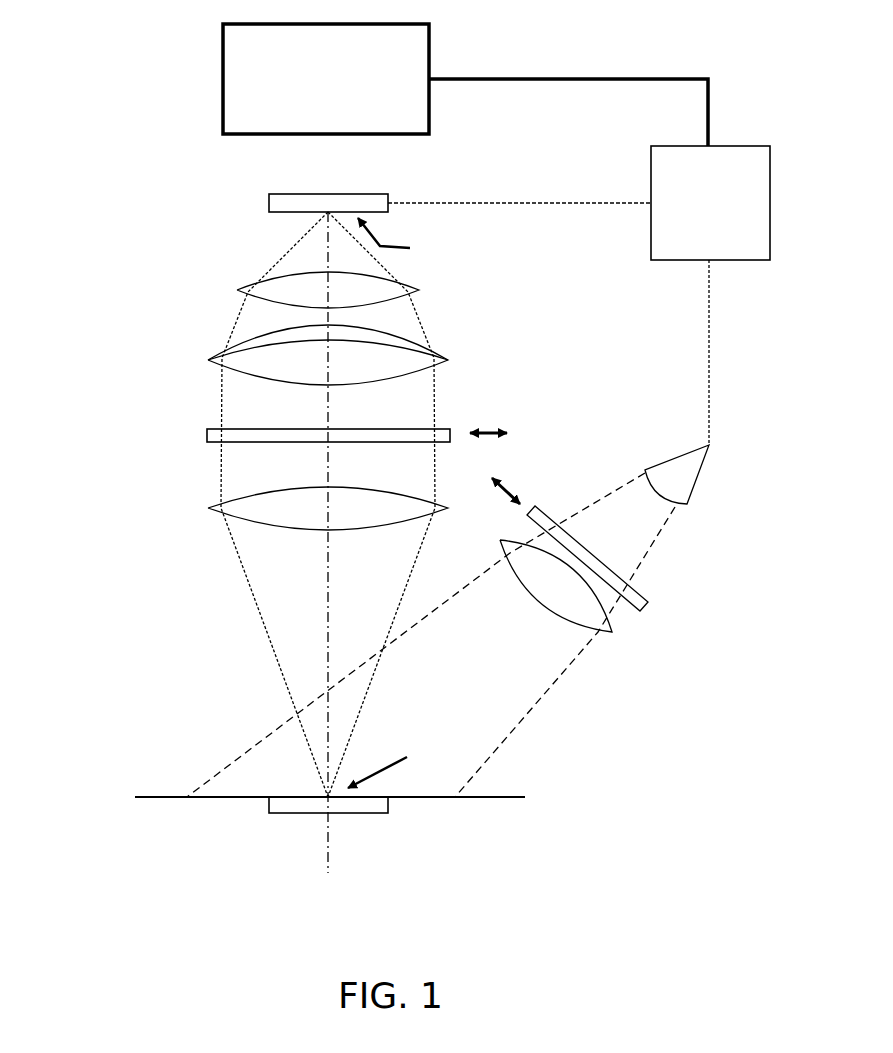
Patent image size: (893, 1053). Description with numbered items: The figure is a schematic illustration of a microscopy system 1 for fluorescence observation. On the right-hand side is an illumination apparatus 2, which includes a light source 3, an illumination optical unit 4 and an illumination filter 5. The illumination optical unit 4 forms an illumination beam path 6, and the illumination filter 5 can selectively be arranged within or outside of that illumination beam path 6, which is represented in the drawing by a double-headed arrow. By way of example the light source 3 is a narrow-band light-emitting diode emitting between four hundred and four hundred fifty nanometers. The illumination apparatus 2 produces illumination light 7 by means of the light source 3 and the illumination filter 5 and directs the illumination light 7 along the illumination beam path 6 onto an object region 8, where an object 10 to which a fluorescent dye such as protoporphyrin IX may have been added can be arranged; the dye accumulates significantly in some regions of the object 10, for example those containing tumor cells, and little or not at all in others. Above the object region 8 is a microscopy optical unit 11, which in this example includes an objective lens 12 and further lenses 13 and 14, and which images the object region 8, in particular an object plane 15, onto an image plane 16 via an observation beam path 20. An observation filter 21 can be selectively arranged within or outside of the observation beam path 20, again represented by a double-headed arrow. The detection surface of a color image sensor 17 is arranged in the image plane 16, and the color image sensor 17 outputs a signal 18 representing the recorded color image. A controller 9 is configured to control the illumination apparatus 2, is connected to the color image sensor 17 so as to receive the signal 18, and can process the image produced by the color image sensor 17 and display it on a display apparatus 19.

The microscopy system 1 is at (125, 301).
The illumination apparatus 2 is at (716, 651).
The light source 3 is at (700, 477).
The illumination optical unit 4 is at (614, 634).
The illumination filter 5 is at (646, 596).
The illumination beam path 6 is at (431, 635).
The illumination light 7 is at (548, 690).
The object region 8 is at (389, 768).
The controller 9 is at (710, 295).
The object 10 is at (366, 815).
The microscopy optical unit 11 is at (112, 443).
The objective lens 12 is at (210, 507).
The lens 13 is at (210, 359).
The lens 14 is at (245, 289).
The object plane 15 is at (223, 800).
The image plane 16 is at (407, 240).
The color image sensor 17 is at (268, 203).
The signal 18 is at (502, 200).
The display apparatus 19 is at (465, 85).
The observation beam path 20 is at (246, 575).
The observation filter 21 is at (206, 432).